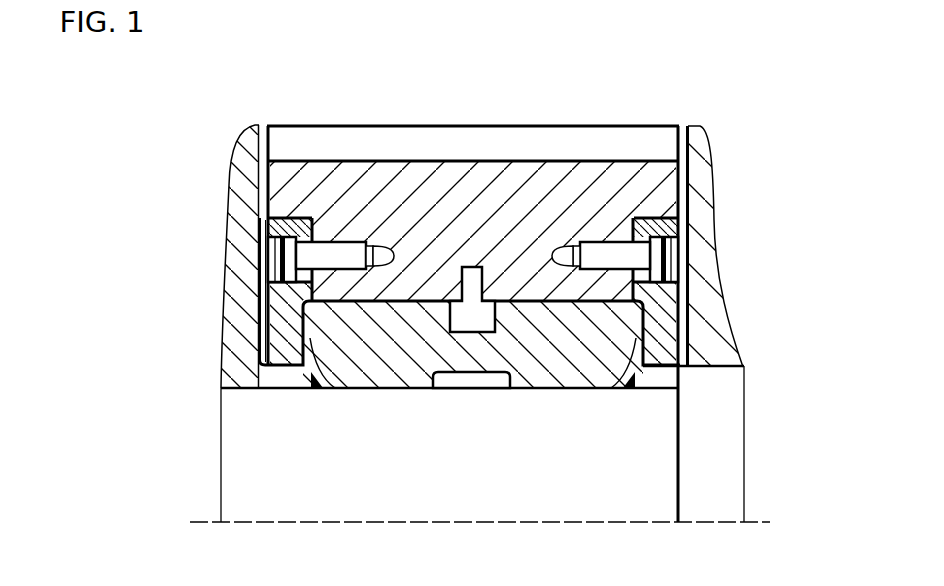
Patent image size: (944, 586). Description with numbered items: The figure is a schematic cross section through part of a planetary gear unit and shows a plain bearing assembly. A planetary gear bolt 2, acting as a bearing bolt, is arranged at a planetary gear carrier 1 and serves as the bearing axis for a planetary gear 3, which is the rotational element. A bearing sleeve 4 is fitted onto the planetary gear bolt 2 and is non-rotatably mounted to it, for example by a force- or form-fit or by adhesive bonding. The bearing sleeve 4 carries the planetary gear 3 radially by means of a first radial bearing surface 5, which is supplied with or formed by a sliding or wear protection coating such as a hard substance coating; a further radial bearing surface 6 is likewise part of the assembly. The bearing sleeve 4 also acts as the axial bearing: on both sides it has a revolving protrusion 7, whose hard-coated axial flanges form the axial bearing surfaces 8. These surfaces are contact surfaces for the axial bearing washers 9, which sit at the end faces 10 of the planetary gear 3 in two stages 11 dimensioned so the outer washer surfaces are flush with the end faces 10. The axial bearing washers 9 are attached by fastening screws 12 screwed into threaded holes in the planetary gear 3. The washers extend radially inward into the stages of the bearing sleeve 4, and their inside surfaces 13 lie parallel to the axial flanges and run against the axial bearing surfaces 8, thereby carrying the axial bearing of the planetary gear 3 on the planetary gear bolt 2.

The planetary gear carrier 1 is at (737, 340).
The planetary gear bolt 2 is at (610, 492).
The planetary gear 3 is at (598, 180).
The bearing sleeve 4 is at (373, 370).
The first radial bearing surface 5 is at (391, 302).
The radial bearing surface 6 is at (412, 300).
The protrusion 7 is at (314, 376).
The axial bearing surface 8 is at (322, 346).
The axial bearing washer 9 is at (283, 224).
The end face 10 is at (261, 170).
The stage 11 is at (324, 213).
The fastening screw 12 is at (317, 259).
The inside surface 13 is at (287, 326).